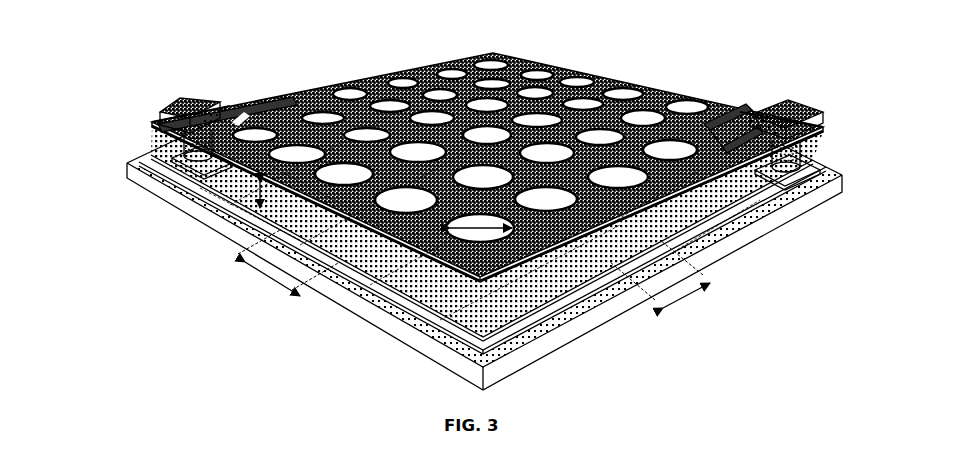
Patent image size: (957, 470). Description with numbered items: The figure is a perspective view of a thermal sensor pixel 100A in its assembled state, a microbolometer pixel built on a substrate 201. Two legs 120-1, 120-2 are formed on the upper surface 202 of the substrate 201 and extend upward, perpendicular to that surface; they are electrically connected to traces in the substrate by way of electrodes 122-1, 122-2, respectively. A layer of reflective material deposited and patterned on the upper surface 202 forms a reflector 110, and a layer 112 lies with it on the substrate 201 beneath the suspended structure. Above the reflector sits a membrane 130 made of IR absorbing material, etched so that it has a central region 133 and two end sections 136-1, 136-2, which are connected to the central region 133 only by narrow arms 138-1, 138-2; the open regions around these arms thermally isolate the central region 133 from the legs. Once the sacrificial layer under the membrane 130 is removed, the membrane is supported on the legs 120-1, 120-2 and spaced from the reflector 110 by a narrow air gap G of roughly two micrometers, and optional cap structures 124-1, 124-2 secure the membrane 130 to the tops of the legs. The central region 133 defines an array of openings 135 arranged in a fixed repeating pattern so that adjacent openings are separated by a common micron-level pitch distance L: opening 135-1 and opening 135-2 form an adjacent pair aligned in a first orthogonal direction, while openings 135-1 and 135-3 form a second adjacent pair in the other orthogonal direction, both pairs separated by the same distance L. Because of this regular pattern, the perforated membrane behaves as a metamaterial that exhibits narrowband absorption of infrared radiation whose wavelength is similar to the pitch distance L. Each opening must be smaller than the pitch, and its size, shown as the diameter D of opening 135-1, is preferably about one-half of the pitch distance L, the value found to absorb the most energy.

The pixel 100A is at (290, 30).
The reflector 110 is at (243, 233).
The electrode layer 112 is at (173, 229).
The leg 120-1 is at (182, 142).
The leg 120-2 is at (802, 150).
The electrode 122-1 is at (176, 165).
The electrode 122-2 is at (822, 186).
The cap structure 124-1 is at (188, 106).
The cap structure 124-2 is at (791, 106).
The membrane 130 is at (375, 60).
The central region 133 is at (657, 86).
The openings 135 is at (537, 118).
The opening 135-1 is at (462, 242).
The opening 135-2 is at (730, 235).
The opening 135-3 is at (398, 212).
The end section 136-1 is at (158, 118).
The end section 136-2 is at (820, 125).
The narrow arm 138-1 is at (259, 108).
The narrow arm 138-2 is at (746, 120).
The substrate 201 is at (213, 227).
The upper surface 202 is at (158, 208).
The air gap G is at (258, 208).
The pitch distance L is at (266, 286).
The diameter D is at (505, 252).